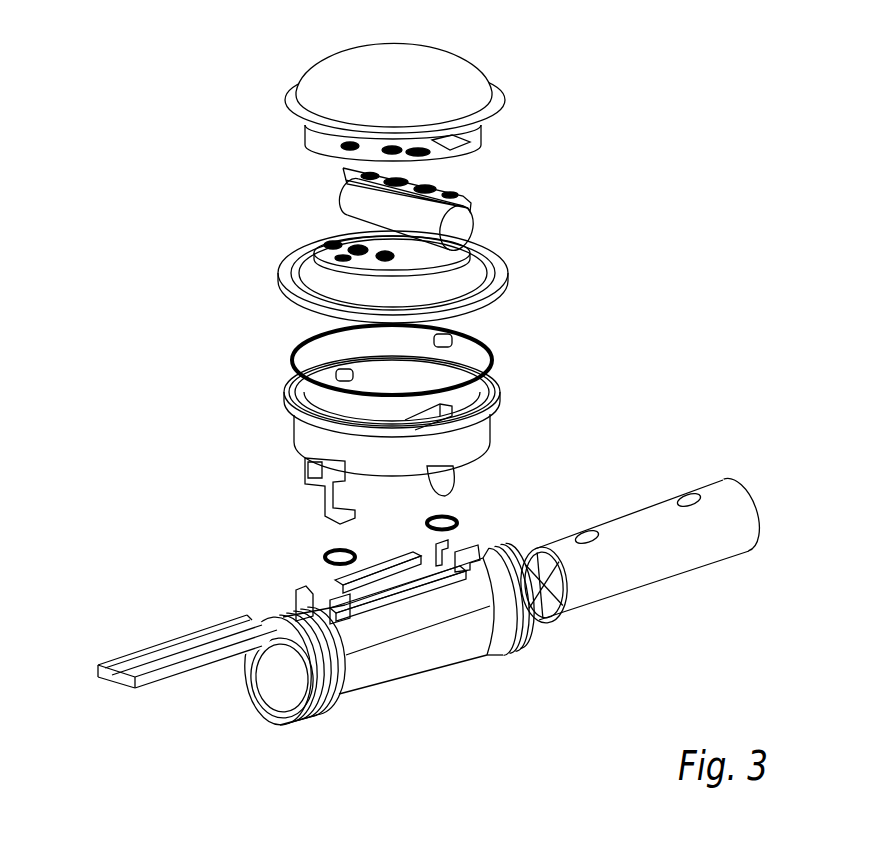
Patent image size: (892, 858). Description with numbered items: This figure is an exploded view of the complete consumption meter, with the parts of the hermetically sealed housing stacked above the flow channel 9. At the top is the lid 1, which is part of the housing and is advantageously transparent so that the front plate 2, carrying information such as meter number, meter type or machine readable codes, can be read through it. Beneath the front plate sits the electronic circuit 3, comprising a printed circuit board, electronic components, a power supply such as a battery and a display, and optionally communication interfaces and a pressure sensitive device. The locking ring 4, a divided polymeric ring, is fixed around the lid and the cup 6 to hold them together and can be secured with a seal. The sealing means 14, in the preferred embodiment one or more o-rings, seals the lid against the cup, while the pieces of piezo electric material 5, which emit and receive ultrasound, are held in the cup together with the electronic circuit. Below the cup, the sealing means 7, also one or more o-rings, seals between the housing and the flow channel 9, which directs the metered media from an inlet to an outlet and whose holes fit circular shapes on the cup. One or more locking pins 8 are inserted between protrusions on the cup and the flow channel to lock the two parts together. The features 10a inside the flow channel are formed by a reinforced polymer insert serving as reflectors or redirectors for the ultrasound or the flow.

The lid 1 is at (522, 107).
The front plate 2 is at (501, 145).
The electronic circuit 3 is at (498, 230).
The locking ring 4 is at (264, 287).
The piezo electric material 5 is at (366, 374).
The cup 6 is at (274, 430).
The sealing means between the cup and the lid 14 is at (470, 397).
The sealing means between the flow channel and the housing 7 is at (389, 529).
The locking pin 8 is at (116, 640).
The flow channel 9 is at (491, 666).
The features inside the flow channel 10a is at (689, 589).